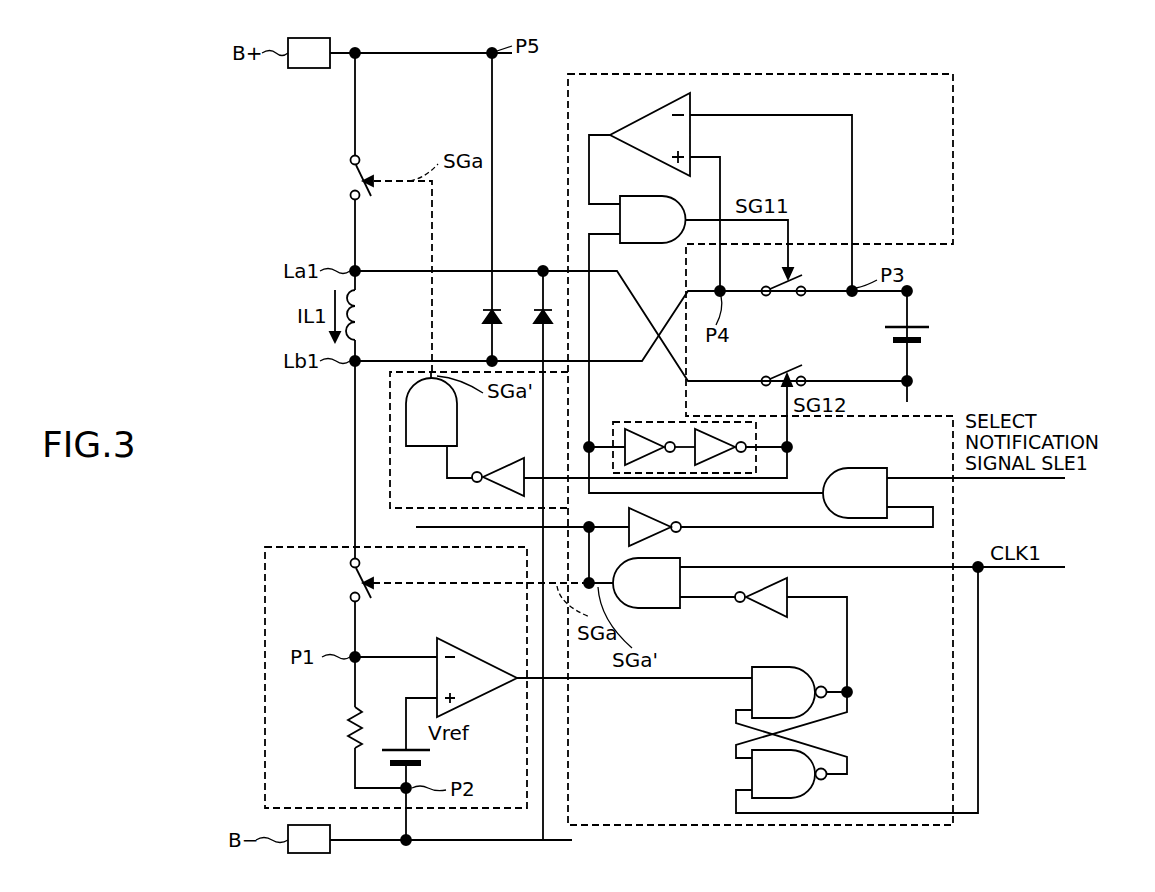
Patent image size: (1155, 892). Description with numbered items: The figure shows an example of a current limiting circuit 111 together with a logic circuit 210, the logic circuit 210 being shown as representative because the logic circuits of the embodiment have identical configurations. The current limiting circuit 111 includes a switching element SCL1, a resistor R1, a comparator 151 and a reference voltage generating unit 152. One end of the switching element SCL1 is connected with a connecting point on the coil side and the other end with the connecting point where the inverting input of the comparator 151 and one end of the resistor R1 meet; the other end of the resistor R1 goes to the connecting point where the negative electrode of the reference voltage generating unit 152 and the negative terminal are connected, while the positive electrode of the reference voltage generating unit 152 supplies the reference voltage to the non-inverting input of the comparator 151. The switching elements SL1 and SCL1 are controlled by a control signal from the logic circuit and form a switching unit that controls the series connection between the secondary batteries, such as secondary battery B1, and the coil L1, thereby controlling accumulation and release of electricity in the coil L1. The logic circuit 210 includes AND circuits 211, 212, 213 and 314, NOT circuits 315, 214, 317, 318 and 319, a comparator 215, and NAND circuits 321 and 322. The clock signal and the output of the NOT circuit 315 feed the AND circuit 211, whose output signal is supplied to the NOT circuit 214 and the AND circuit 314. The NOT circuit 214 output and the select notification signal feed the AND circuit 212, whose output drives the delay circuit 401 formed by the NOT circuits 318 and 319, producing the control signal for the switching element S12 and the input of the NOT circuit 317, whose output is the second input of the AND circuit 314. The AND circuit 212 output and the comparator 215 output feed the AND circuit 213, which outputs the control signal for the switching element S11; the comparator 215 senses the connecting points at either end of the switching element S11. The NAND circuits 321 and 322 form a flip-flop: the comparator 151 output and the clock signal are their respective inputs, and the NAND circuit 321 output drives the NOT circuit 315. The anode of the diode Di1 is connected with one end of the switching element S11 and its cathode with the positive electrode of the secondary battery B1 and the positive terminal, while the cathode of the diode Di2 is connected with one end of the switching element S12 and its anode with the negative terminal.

The current limiting circuit 111 is at (263, 683).
The comparator 151 is at (478, 655).
The reference voltage generating unit 152 is at (424, 765).
The logic circuit 210 is at (903, 73).
The AND circuit 211 is at (660, 558).
The AND circuit 212 is at (866, 468).
The AND circuit 213 is at (650, 196).
The NOT circuit 214 is at (652, 512).
The comparator 215 is at (652, 112).
The AND circuit 314 is at (457, 412).
The NOT circuit 315 is at (760, 617).
The NOT circuit 317 is at (500, 458).
The NOT circuit 318 is at (650, 440).
The NOT circuit 319 is at (700, 440).
The NAND circuit 321 is at (773, 667).
The NAND circuit 322 is at (803, 795).
The delay circuit 401 is at (756, 432).
The switching element SL1 is at (364, 172).
The switching element SCL1 is at (350, 574).
The coil L1 is at (362, 314).
The resistor R1 is at (338, 727).
The diode Di1 is at (486, 309).
The diode Di2 is at (537, 309).
The switching element S11 is at (787, 292).
The switching element S12 is at (797, 369).
The secondary battery B1 is at (924, 346).